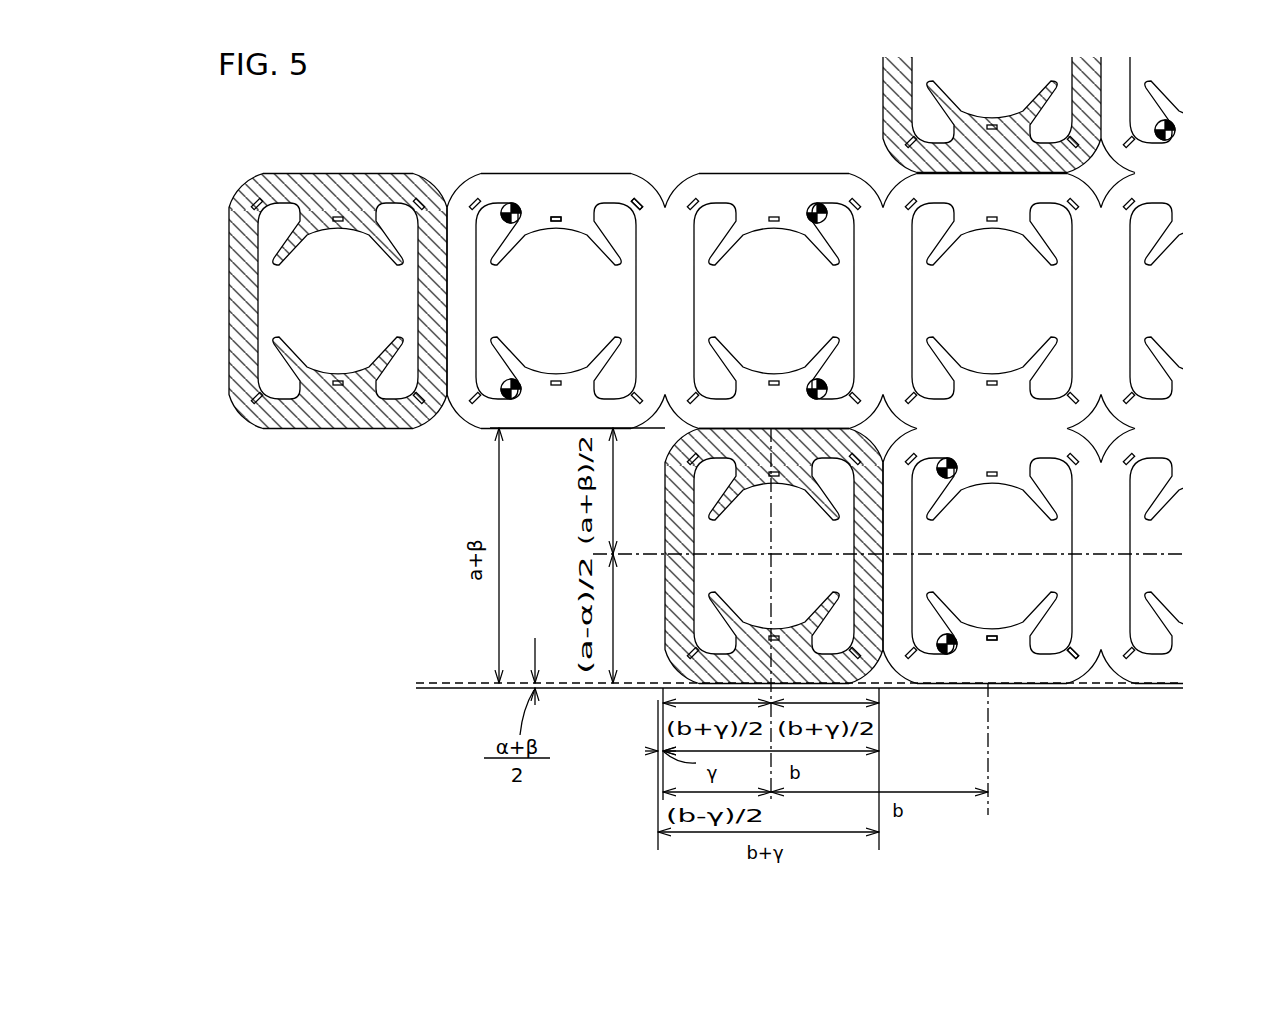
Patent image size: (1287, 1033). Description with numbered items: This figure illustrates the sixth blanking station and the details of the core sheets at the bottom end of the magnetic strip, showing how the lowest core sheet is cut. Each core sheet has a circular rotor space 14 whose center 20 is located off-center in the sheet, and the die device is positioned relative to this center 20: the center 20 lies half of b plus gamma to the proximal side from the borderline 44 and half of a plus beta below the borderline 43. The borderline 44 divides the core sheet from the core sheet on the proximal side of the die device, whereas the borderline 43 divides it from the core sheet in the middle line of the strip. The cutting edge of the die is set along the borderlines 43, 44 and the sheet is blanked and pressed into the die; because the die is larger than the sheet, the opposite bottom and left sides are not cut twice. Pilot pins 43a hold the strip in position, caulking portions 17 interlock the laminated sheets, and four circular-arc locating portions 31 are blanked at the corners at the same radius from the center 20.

The rotor space 14 is at (765, 255).
The caulking portions 17 is at (634, 202).
The center of the rotor space 20 is at (777, 560).
The locating portions 31 is at (866, 428).
The borderline 43 is at (668, 440).
The pilot pins 43a is at (817, 202).
The borderline 44 is at (880, 770).